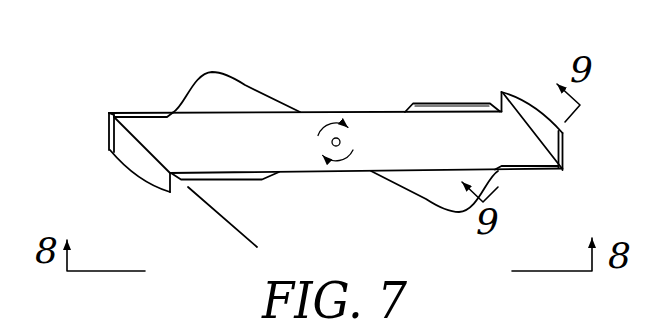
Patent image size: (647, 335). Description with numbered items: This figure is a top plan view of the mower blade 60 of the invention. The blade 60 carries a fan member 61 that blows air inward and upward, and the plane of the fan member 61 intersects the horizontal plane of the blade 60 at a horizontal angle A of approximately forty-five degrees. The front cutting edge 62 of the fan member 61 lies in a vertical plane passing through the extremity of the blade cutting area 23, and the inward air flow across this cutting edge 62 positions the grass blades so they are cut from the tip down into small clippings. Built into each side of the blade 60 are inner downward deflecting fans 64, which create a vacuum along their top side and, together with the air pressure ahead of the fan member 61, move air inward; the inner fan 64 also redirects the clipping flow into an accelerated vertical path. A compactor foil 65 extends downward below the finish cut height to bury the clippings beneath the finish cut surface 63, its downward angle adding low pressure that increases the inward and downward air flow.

The blade cutting area 23 is at (111, 113).
The blade 60 is at (315, 171).
The fan member 61 is at (136, 158).
The front cutting edge 62 is at (108, 127).
The finish cut surface 63 is at (145, 112).
The inner downward deflecting fan 64 is at (223, 72).
The compactor foil 65 is at (227, 172).
The horizontal angle A is at (277, 173).